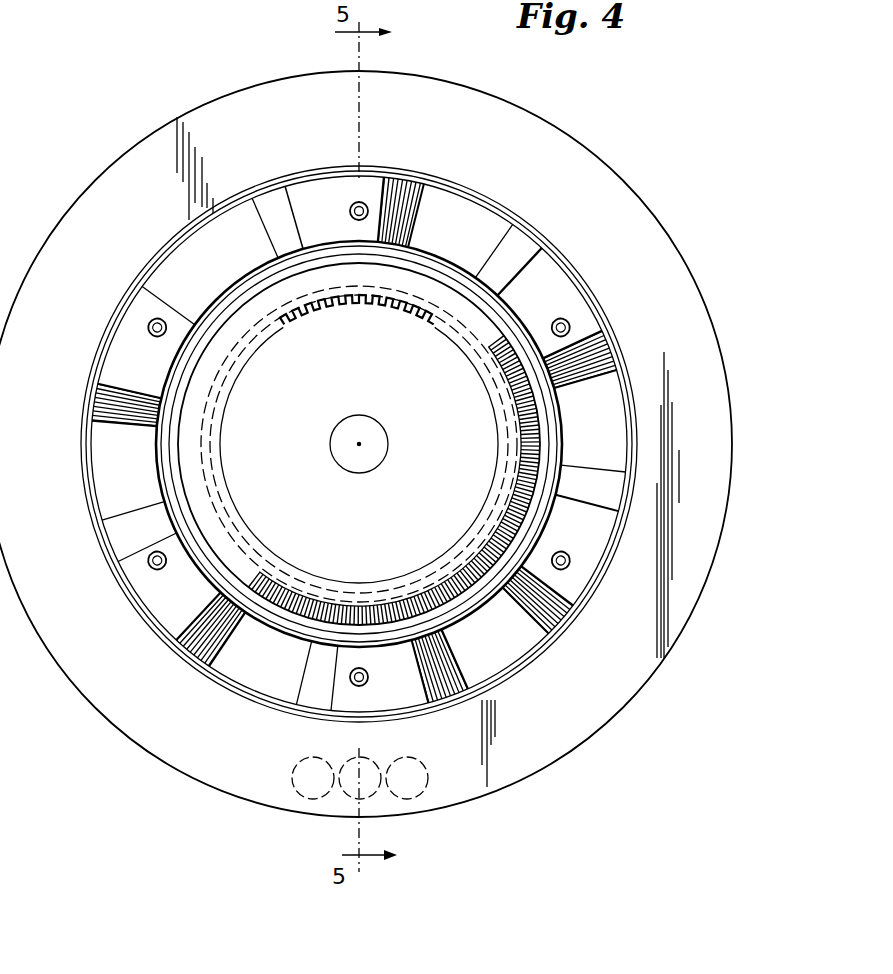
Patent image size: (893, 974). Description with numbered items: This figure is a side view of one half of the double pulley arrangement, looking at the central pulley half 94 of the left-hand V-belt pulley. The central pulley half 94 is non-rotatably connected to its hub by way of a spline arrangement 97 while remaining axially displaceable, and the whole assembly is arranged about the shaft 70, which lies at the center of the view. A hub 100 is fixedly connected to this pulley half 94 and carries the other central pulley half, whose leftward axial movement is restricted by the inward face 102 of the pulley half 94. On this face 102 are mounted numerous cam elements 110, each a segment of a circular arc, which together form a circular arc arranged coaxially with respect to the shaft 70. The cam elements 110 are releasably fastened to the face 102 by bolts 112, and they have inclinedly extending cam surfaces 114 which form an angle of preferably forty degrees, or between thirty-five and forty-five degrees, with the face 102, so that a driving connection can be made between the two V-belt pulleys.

The shaft 70 is at (389, 444).
The central pulley half 94 is at (582, 147).
The spline arrangement 97 is at (352, 302).
The hub 100 is at (428, 293).
The inward face 102 is at (600, 199).
The cam element 110 is at (377, 178).
The bolts 112 is at (347, 210).
The cam surfaces 114 is at (272, 200).